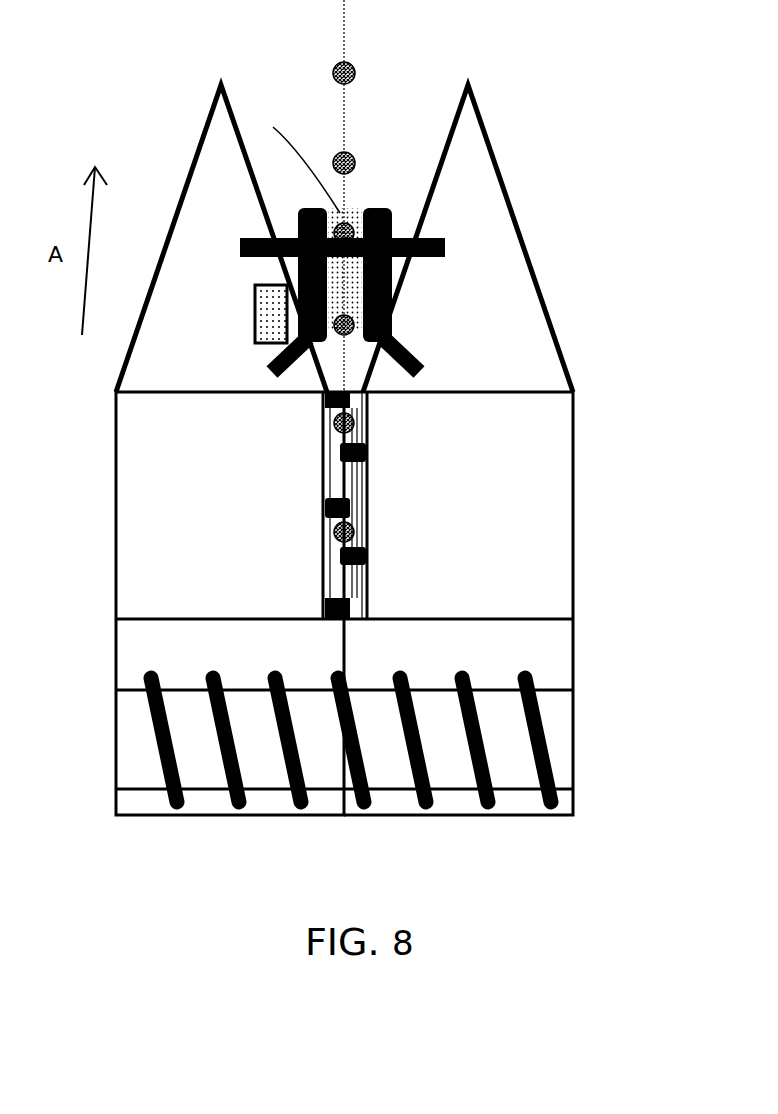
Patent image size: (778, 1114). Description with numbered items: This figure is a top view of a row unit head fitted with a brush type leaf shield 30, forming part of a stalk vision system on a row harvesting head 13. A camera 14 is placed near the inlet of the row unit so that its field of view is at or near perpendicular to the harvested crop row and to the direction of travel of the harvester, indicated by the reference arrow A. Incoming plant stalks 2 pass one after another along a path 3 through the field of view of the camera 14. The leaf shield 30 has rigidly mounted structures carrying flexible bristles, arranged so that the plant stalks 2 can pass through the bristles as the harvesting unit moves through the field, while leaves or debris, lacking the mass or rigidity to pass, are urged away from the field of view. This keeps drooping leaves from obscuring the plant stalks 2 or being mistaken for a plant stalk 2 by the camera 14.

The plant stalk 2 is at (355, 70).
The trajectory path 3 is at (298, 157).
The row harvesting head 13 is at (563, 742).
The camera 14 is at (258, 310).
The leaf shield 30 is at (420, 235).